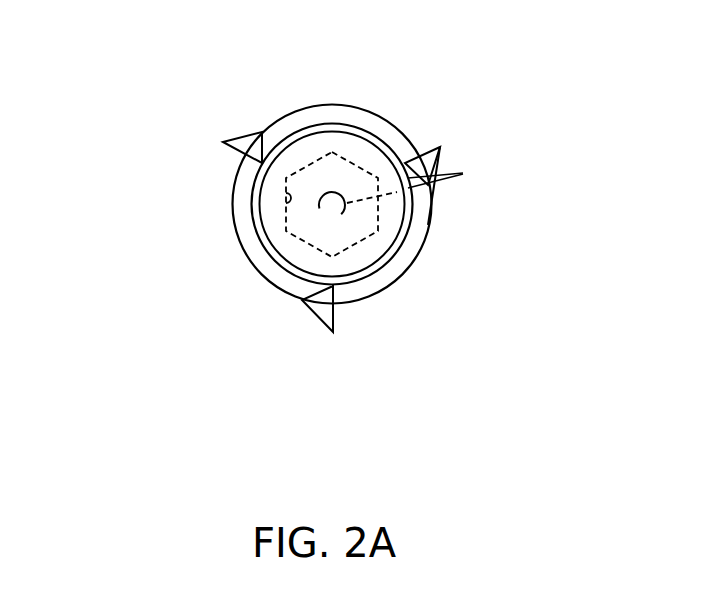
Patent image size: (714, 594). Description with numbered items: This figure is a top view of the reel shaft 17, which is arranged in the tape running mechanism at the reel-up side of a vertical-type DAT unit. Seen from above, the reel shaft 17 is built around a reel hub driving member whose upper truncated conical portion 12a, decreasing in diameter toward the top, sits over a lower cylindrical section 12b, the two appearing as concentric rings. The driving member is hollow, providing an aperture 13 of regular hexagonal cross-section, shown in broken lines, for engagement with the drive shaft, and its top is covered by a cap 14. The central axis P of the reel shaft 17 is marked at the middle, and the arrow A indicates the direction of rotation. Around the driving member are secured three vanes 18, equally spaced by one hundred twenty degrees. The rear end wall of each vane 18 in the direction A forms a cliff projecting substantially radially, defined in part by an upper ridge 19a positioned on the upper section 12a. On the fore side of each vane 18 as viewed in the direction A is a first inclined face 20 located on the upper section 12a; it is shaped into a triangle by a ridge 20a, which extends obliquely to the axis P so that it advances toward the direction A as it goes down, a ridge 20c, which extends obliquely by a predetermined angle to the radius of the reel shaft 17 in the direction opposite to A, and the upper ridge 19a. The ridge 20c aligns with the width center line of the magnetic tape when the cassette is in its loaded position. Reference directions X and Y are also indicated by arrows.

The upper truncated conical portion 12a is at (375, 127).
The lower cylindrical section 12b is at (343, 105).
The aperture 13 is at (290, 203).
The cap 14 is at (300, 257).
The reel shaft 17 is at (271, 121).
The vanes 18 is at (462, 138).
The upper ridge 19a is at (432, 140).
The first inclined face 20 is at (430, 160).
The ridge of the first inclined face 20a is at (346, 207).
The ridge of the first inclined face 20c is at (433, 167).
The direction of rotation A is at (405, 190).
The axis P is at (336, 208).
The X direction X is at (114, 214).
The Y direction Y is at (332, 387).